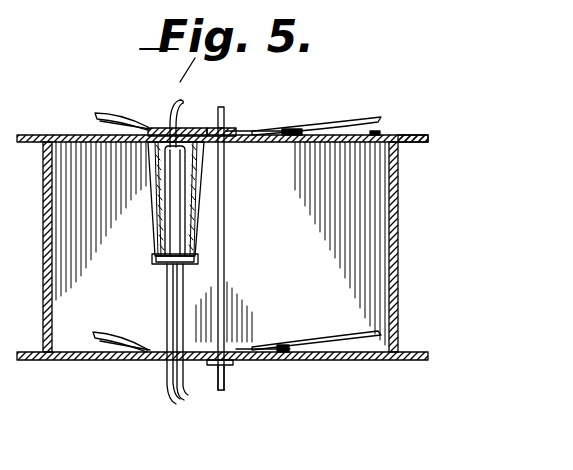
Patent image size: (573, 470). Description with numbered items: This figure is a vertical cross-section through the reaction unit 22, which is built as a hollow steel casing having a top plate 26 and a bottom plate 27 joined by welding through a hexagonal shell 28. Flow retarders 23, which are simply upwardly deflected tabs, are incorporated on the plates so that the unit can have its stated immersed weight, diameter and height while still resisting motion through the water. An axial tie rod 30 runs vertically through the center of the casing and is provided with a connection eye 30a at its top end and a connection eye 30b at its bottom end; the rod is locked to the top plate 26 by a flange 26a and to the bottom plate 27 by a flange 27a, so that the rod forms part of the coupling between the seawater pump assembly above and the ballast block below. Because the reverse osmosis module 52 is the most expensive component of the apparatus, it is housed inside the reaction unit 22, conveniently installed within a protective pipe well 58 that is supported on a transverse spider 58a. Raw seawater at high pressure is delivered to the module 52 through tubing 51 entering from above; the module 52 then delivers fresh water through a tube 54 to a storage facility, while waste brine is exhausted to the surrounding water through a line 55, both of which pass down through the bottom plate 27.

The reaction unit 22 is at (436, 101).
The flow retarders 23 is at (127, 117).
The top plate 26 is at (62, 134).
The flange 26a is at (230, 130).
The bottom plate 27 is at (80, 361).
The flange 27a is at (231, 365).
The hexagonal shell 28 is at (74, 278).
The axial tie rod 30 is at (227, 197).
The connection eye 30a is at (218, 110).
The connection eye 30b is at (226, 392).
The tubing 51 is at (183, 102).
The reverse osmosis module 52 is at (157, 240).
The tube 54 is at (168, 383).
The line 55 is at (184, 394).
The protective pipe well 58 is at (160, 182).
The transverse spider 58a is at (165, 264).